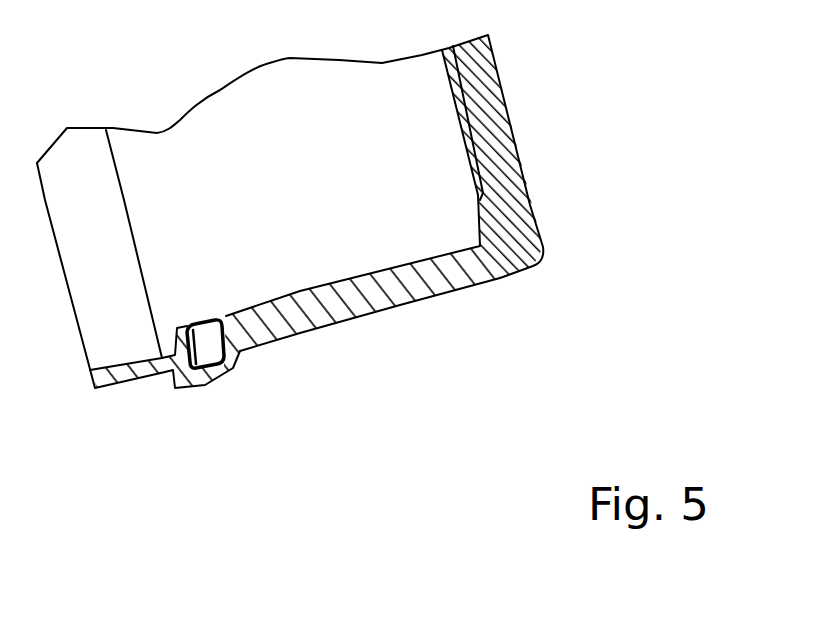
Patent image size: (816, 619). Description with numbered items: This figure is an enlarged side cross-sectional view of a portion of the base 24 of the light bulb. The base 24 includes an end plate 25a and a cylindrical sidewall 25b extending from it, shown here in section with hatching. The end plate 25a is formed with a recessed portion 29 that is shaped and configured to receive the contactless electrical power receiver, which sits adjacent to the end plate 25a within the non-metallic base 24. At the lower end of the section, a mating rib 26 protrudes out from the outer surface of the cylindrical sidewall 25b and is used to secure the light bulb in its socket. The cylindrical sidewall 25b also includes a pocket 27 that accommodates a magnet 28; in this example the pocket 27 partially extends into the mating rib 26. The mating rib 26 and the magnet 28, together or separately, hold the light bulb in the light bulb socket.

The base 24 is at (152, 123).
The end plate 25a is at (517, 137).
The cylindrical sidewall 25b is at (433, 287).
The mating rib 26 is at (208, 392).
The pocket 27 is at (172, 350).
The magnet 28 is at (218, 350).
The recessed portion 29 is at (458, 87).